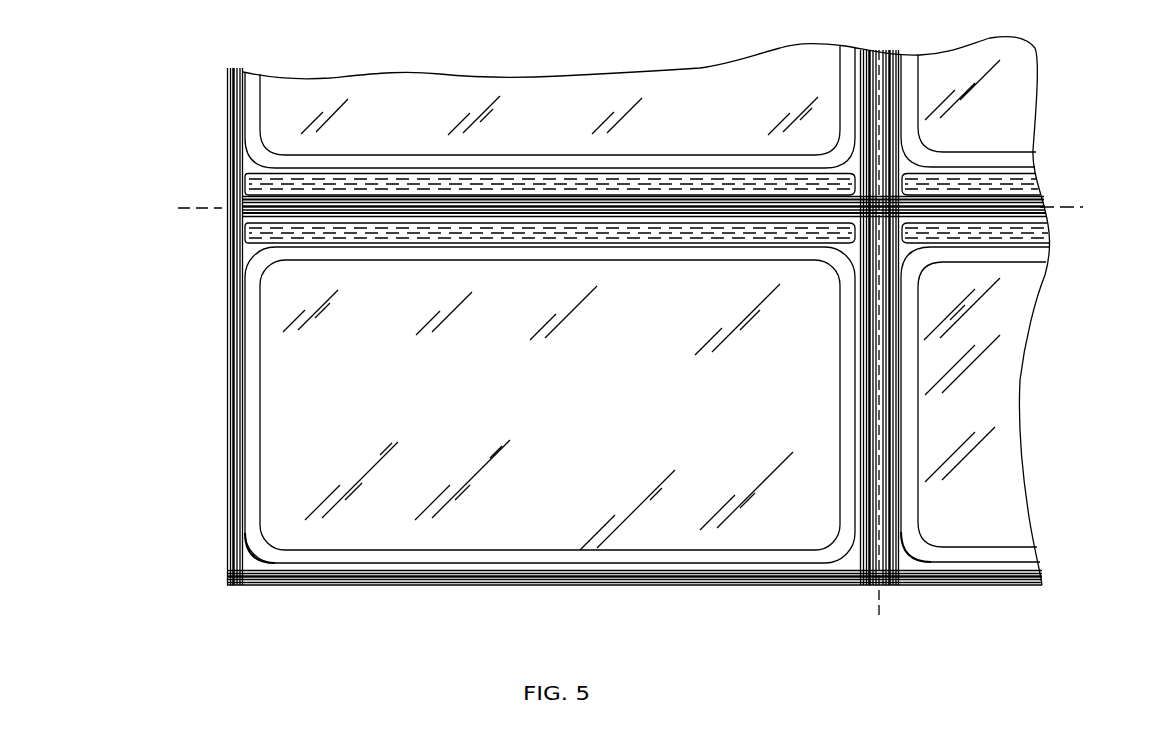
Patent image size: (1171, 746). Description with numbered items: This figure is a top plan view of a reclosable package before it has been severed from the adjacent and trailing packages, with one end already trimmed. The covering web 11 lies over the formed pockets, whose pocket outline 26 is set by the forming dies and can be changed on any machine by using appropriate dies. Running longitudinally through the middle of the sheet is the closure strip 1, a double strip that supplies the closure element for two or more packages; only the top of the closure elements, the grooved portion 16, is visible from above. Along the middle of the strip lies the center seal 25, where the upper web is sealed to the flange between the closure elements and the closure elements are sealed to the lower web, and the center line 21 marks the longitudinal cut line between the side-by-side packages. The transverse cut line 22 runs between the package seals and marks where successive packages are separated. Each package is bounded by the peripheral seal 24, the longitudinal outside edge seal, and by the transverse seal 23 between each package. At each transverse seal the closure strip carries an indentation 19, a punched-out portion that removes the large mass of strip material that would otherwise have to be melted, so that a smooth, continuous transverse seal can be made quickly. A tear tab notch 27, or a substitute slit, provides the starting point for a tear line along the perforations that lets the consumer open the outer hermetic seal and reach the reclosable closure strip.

The closure strip 1 is at (1037, 186).
The covering web 11 is at (668, 530).
The grooved portion 16 is at (257, 173).
The indentation 19 is at (228, 191).
The center line 21 is at (1083, 207).
The transverse cut line 22 is at (878, 608).
The transverse seal 23 is at (897, 555).
The peripheral seal 24 is at (303, 583).
The center seal 25 is at (223, 212).
The pocket outline 26 is at (247, 548).
The tear tab notch 27 is at (227, 203).